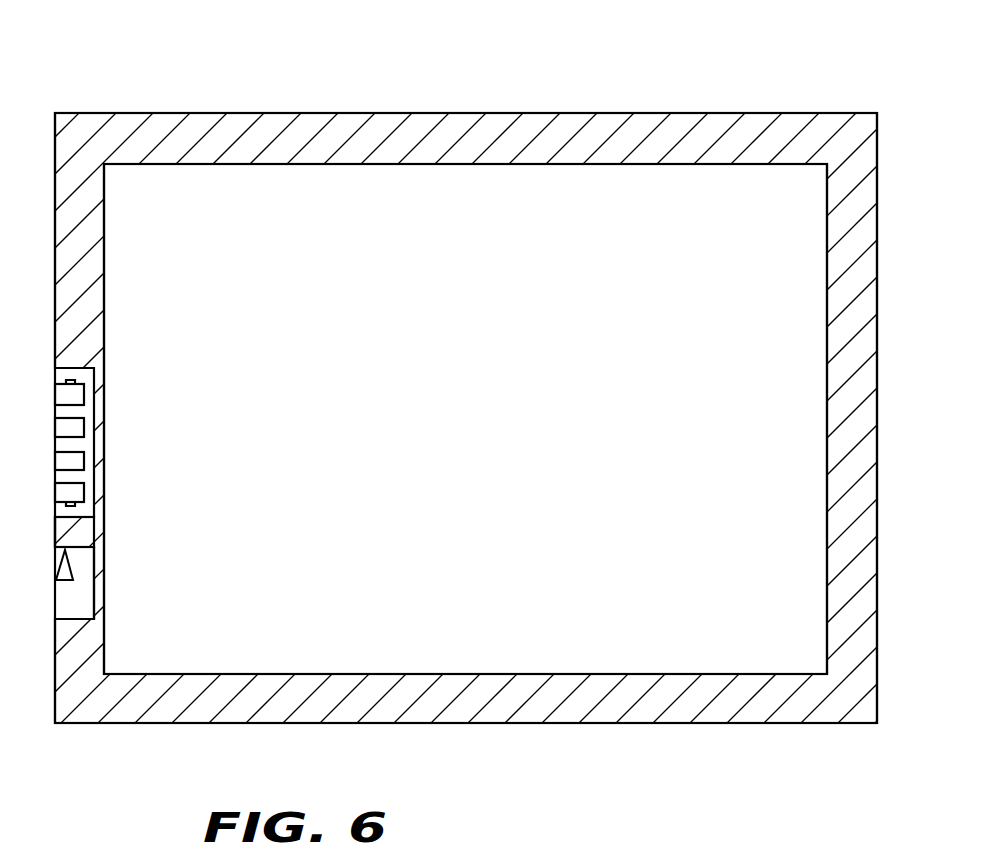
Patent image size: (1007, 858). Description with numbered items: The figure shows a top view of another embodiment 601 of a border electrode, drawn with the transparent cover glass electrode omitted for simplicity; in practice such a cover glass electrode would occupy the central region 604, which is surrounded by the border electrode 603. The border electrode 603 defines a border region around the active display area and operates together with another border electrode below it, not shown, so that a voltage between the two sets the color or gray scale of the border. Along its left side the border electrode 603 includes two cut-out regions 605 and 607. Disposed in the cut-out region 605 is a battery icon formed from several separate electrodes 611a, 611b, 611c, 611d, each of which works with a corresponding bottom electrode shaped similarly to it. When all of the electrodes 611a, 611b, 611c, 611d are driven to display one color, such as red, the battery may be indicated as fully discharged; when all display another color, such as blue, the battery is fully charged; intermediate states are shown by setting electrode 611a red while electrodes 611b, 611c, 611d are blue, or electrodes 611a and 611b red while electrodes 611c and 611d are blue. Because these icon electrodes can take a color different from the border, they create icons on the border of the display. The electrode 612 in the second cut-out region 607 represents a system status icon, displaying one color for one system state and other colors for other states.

The embodiment of a border electrode 601 is at (339, 67).
The border electrode 603 is at (680, 113).
The region 604 is at (493, 650).
The cut-out region 605 is at (78, 512).
The cut-out region 607 is at (72, 603).
The battery electrode 611a is at (85, 391).
The battery electrode 611b is at (85, 426).
The battery electrode 611c is at (85, 459).
The battery electrode 611d is at (85, 491).
The electrode 612 is at (73, 565).